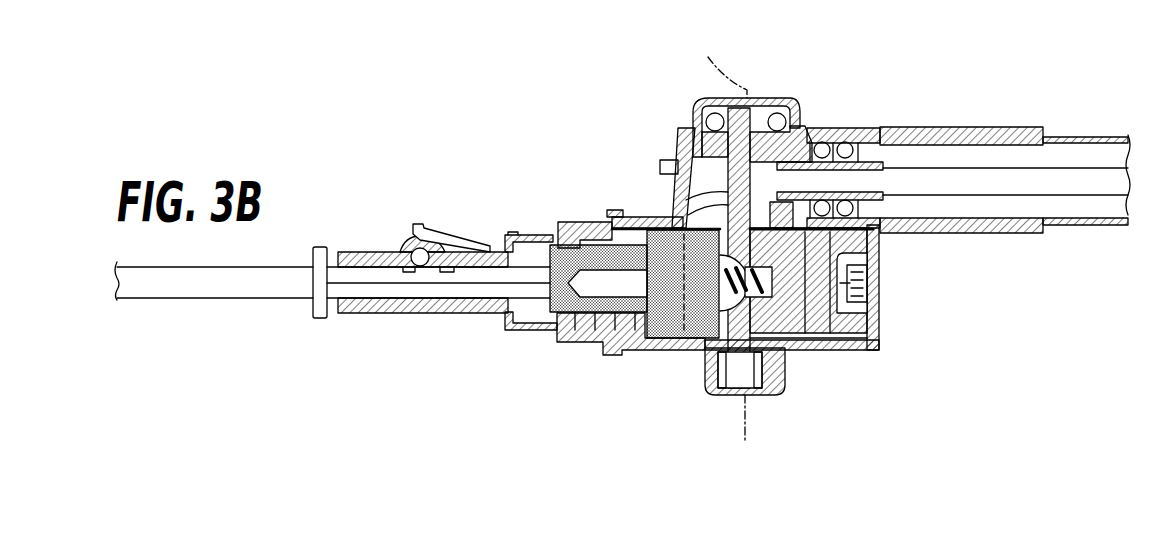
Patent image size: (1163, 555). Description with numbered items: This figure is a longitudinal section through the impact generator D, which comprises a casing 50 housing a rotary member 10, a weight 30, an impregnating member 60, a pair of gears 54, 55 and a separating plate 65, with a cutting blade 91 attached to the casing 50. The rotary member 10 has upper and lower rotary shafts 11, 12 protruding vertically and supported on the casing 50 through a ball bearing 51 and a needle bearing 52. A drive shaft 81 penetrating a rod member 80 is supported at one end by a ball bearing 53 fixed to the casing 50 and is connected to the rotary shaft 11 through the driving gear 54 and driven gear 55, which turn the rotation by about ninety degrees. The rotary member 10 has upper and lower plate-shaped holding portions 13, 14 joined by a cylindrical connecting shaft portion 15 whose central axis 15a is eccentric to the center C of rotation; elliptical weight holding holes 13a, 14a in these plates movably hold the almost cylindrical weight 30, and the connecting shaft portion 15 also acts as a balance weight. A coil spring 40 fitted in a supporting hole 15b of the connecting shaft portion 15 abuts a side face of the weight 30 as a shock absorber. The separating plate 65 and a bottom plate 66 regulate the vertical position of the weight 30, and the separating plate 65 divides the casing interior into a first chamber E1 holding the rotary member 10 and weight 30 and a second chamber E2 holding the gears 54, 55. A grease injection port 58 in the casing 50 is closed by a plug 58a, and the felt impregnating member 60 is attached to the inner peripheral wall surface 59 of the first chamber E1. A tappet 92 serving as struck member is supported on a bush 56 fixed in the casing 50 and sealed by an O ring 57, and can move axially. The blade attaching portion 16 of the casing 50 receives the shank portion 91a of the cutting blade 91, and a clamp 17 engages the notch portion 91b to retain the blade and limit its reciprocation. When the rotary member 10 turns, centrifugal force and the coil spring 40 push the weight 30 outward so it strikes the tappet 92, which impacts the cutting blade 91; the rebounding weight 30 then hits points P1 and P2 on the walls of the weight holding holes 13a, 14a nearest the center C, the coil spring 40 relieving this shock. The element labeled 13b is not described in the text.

The rotary member 10 is at (883, 297).
The rotary shaft 11 is at (703, 172).
The rotary shaft 12 is at (738, 395).
The upper plate-shaped holding portion 13 is at (883, 250).
The weight holding hole 13a is at (672, 222).
The housing portion 13b is at (973, 4).
The lower plate-shaped holding portion 14 is at (883, 322).
The weight holding hole 14a is at (680, 367).
The connecting shaft portion 15 is at (843, 350).
The central axis 15a is at (837, 353).
The supporting hole 15b is at (880, 335).
The blade attaching portion 16 is at (400, 308).
The clamp 17 is at (413, 250).
The weight 30 is at (652, 353).
The coil spring 40 is at (700, 0).
The casing 50 is at (670, 350).
The bearing 51 is at (682, 100).
The bearing 52 is at (713, 370).
The ball bearing 53 is at (868, 112).
The gear 54 is at (840, 112).
The gear 55 is at (815, 112).
The bush 56 is at (585, 340).
The O ring 57 is at (605, 213).
The grease injection port 58 is at (682, 124).
The plug 58a is at (662, 130).
The inner peripheral wall surface 59 is at (887, 278).
The impregnating member 60 is at (883, 300).
The separating plate 65 is at (883, 243).
The bottom plate 66 is at (872, 348).
The rod member 80 is at (1097, 136).
The drive shaft 81 is at (1065, 175).
The cutting blade 91 is at (283, 309).
The shank portion 91a is at (367, 275).
The notch portion 91b is at (458, 255).
The tappet 92 is at (535, 325).
The center of rotation C is at (718, 236).
The impact generator D is at (447, 0).
The first chamber E1 is at (883, 310).
The second chamber E2 is at (678, 105).
The point P1 is at (745, 98).
The point P2 is at (753, 395).